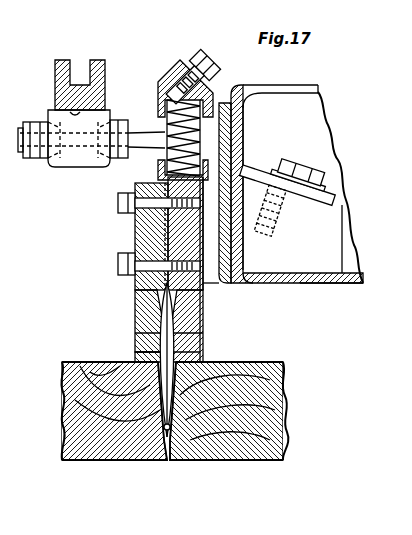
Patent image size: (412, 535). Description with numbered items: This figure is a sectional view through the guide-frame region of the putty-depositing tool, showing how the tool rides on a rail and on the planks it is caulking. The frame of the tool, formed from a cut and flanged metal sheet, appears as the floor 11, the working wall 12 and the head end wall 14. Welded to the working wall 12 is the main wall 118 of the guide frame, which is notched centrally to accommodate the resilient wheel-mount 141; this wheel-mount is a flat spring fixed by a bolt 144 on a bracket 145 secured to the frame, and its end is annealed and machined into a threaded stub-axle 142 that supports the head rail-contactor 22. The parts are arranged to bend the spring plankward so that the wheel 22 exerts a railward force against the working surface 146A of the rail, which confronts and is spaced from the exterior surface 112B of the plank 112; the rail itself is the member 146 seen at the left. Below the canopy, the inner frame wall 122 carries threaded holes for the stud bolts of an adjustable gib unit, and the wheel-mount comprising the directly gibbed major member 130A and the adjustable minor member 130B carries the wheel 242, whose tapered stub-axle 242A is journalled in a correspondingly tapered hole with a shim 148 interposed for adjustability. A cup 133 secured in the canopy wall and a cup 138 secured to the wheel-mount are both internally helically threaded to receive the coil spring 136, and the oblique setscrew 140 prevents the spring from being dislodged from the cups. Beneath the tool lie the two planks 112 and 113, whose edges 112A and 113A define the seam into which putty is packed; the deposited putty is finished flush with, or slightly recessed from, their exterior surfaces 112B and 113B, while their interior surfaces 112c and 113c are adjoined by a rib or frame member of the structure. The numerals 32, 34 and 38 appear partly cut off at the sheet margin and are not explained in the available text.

The floor 11 is at (318, 284).
The working wall 12 is at (243, 266).
The head end wall 14 is at (334, 170).
The head rail-contactor 22 is at (97, 120).
The member 32 is at (8, 74).
The member 34 is at (8, 118).
The member 38 is at (8, 152).
The plank 112 is at (110, 360).
The edge of plank 112A is at (157, 440).
The exterior surface of plank 112B is at (92, 361).
The interior surface of plank 112c is at (92, 461).
The plank 113 is at (285, 388).
The edge of plank 113A is at (174, 376).
The exterior surface of plank 113B is at (262, 362).
The interior surface of plank 113c is at (263, 461).
The main wall 118 is at (228, 250).
The inner frame wall 122 is at (212, 230).
The major member 130A is at (135, 219).
The minor member 130B is at (143, 240).
The cup 133 is at (213, 95).
The coil spring 136 is at (243, 108).
The cup 138 is at (160, 173).
The oblique setscrew 140 is at (200, 63).
The resilient wheel-mount 141 is at (250, 162).
The stub-axle 142 is at (138, 130).
The bolt 144 is at (300, 158).
The bracket 145 is at (336, 238).
The fork 146 is at (55, 70).
The working surface of rail 146A is at (77, 115).
The shim 148 is at (118, 257).
The wheel 242 is at (176, 317).
The stub-axle 242A is at (152, 318).